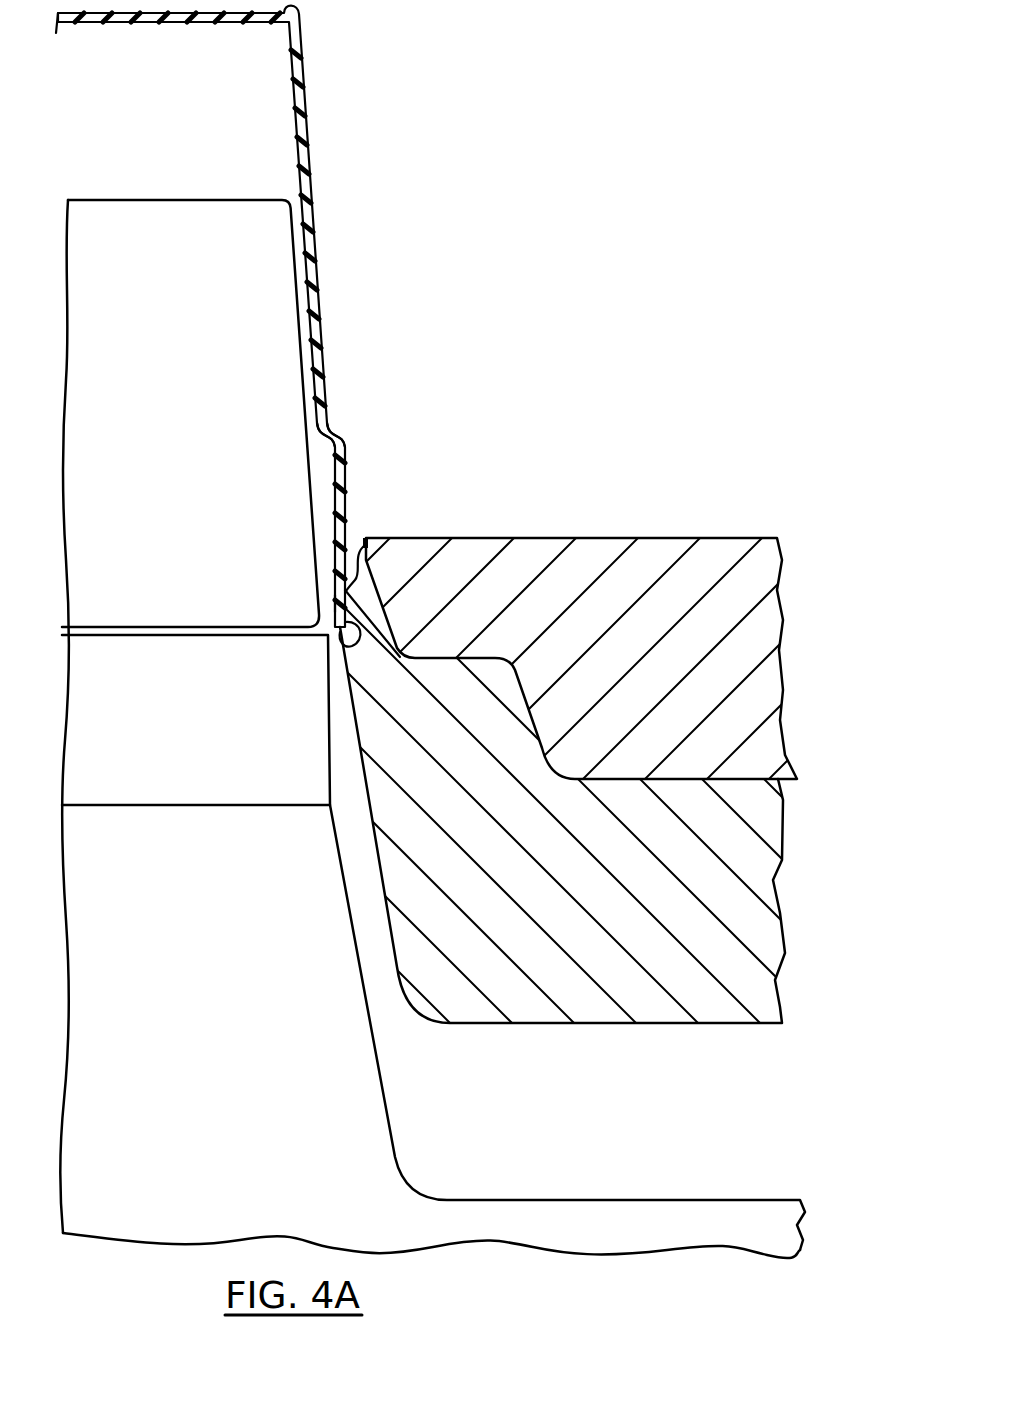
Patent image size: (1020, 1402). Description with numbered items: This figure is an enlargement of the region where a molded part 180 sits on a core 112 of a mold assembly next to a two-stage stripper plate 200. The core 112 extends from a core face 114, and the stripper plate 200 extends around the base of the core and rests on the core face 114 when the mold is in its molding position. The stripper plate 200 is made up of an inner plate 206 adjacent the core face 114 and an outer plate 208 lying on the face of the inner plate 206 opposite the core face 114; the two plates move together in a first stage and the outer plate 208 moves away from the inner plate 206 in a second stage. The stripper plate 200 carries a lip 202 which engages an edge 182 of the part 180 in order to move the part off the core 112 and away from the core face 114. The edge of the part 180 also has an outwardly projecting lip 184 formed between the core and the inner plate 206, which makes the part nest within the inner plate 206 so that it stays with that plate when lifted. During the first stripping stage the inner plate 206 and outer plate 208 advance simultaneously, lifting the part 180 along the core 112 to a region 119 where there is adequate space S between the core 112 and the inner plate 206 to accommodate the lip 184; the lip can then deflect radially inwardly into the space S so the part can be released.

The core 112 is at (280, 408).
The core face 114 is at (604, 1200).
The region 119 is at (315, 490).
The part 180 is at (318, 275).
The edge 182 is at (352, 542).
The lip 184 is at (352, 630).
The stripper plate 200 is at (510, 786).
The lip 202 is at (368, 590).
The inner plate 206 is at (533, 1005).
The outer plate 208 is at (625, 575).
The space S is at (310, 603).